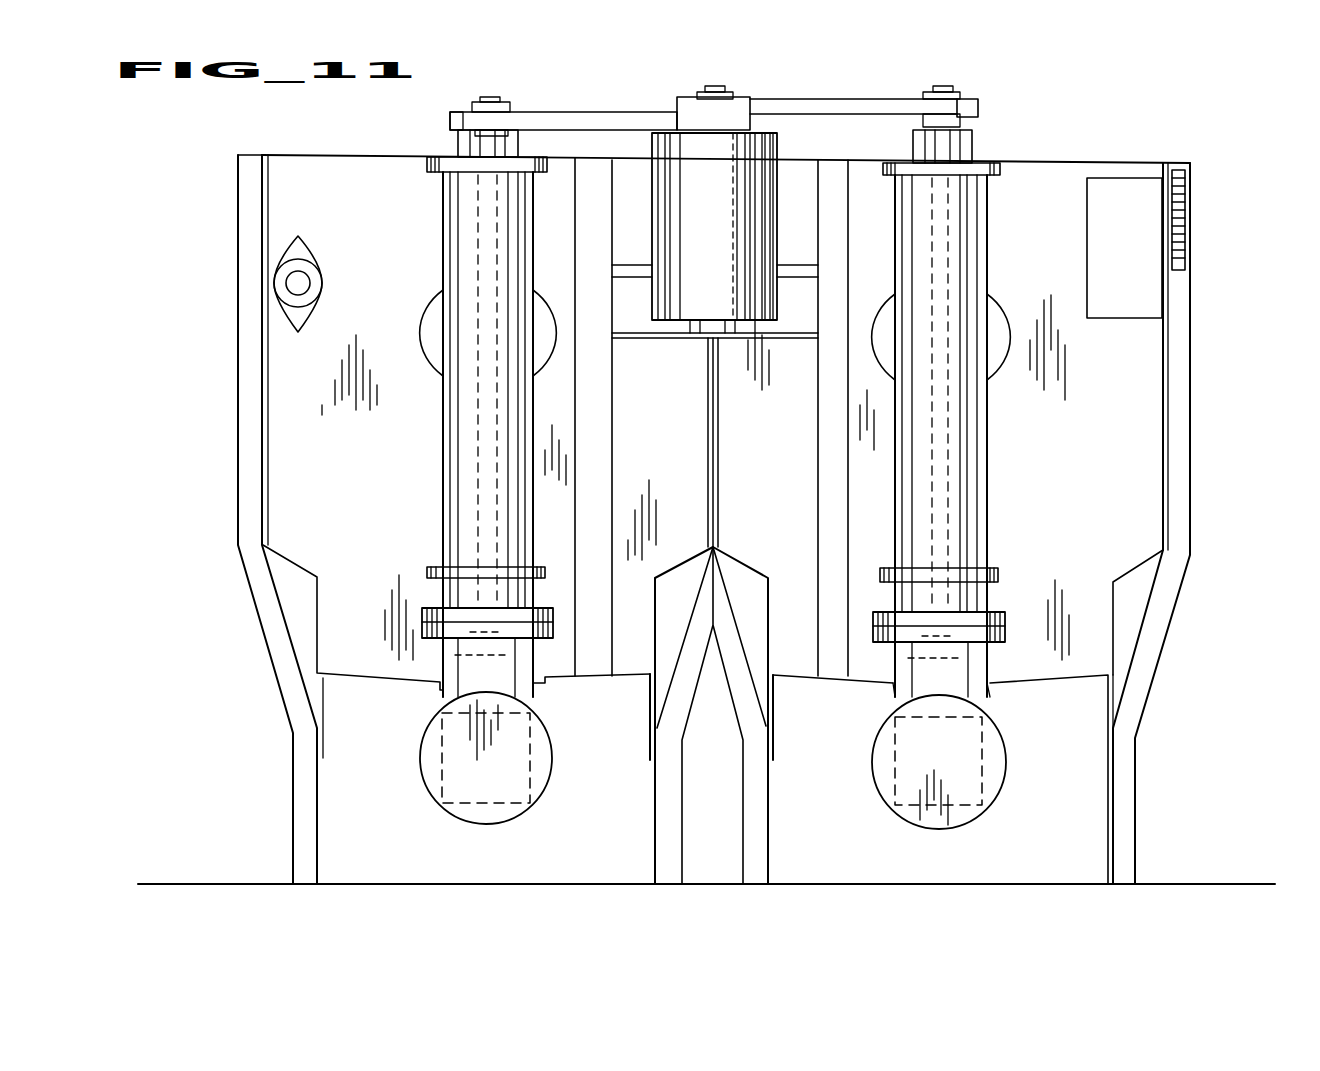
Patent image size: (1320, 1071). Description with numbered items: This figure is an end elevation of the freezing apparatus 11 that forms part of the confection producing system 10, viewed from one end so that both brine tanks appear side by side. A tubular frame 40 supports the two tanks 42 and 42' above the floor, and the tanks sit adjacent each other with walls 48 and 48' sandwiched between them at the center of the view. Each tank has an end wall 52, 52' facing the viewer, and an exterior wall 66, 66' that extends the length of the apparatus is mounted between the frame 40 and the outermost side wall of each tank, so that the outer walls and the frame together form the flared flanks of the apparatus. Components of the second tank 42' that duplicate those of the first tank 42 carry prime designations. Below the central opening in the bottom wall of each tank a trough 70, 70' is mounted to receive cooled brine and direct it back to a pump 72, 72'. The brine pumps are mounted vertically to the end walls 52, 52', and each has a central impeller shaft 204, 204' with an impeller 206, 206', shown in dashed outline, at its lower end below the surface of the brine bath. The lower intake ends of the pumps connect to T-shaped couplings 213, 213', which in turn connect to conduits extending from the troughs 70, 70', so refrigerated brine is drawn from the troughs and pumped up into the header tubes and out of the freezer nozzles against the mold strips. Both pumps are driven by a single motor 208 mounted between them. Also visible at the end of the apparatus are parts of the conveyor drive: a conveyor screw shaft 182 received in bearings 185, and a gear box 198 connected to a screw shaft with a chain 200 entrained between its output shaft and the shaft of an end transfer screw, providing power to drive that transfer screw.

The confection producing system 10 is at (195, 170).
The freezing apparatus 11 is at (270, 157).
The tubular frame 40 is at (1127, 742).
The tank 42 is at (1197, 523).
The tank 42' is at (225, 519).
The wall 48 is at (745, 442).
The wall 48' is at (669, 442).
The end wall 52 is at (955, 522).
The end wall 52' is at (459, 458).
The exterior wall 66 is at (1181, 523).
The exterior wall 66' is at (237, 519).
The trough 70 is at (960, 762).
The trough 70' is at (507, 758).
The pump 72 is at (957, 495).
The pump 72' is at (462, 493).
The shaft 182 is at (302, 283).
The bearings 185 is at (312, 293).
The gear box 198 is at (1150, 275).
The chain 200 is at (1185, 250).
The central impeller shaft 204 is at (968, 391).
The central impeller shaft 204' is at (450, 397).
The impeller 206 is at (902, 687).
The impeller 206' is at (443, 690).
The motor 208 is at (778, 152).
The T-shaped coupling 213 is at (986, 761).
The T-shaped coupling 213' is at (526, 758).